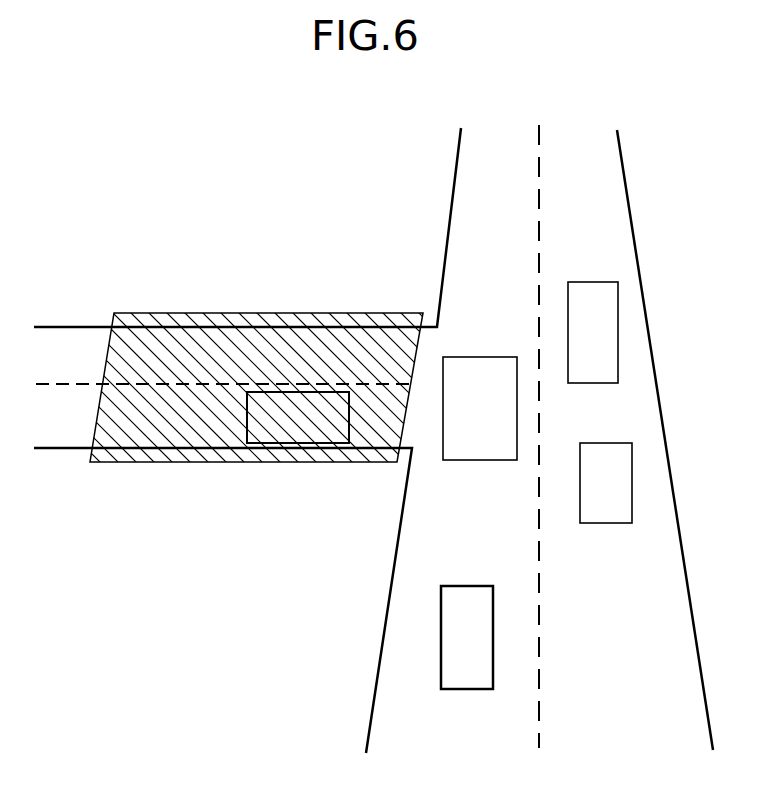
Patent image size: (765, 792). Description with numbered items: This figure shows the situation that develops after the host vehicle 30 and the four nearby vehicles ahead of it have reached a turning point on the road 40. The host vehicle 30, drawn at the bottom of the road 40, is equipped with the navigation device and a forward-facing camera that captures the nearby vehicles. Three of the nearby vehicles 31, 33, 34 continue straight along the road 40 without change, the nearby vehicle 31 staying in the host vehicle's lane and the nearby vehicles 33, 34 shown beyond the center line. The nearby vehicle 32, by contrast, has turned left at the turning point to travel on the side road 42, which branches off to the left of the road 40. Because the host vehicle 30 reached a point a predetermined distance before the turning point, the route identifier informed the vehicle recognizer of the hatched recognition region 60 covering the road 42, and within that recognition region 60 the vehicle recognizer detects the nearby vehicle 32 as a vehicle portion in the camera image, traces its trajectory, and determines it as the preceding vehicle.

The host vehicle 30 is at (465, 690).
The nearby vehicle 31 is at (485, 357).
The nearby vehicle 32 is at (287, 425).
The nearby vehicle 33 is at (598, 282).
The nearby vehicle 34 is at (612, 443).
The road 40 is at (397, 690).
The road 42 is at (65, 435).
The recognition region 60 is at (236, 313).